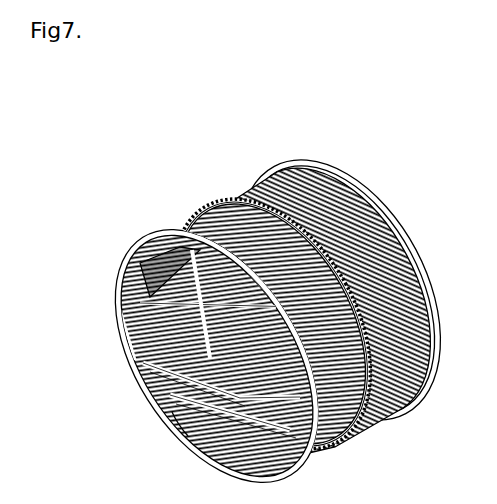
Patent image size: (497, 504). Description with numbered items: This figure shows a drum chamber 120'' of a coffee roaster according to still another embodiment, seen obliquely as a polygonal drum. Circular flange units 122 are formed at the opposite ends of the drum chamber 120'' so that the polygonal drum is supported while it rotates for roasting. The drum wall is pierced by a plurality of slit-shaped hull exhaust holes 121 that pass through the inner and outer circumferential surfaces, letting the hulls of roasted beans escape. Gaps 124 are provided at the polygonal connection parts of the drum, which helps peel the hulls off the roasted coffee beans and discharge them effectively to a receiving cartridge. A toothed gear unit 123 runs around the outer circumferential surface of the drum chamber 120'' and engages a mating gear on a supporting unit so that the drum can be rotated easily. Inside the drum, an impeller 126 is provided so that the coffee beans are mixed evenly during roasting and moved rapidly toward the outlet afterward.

The drum chamber 120'' is at (262, 313).
The slit-shaped hull exhaust holes 121 is at (399, 232).
The circular flange units 122 is at (182, 232).
The gear unit 123 is at (232, 196).
The gaps 124 is at (183, 428).
The impeller 126 is at (166, 393).